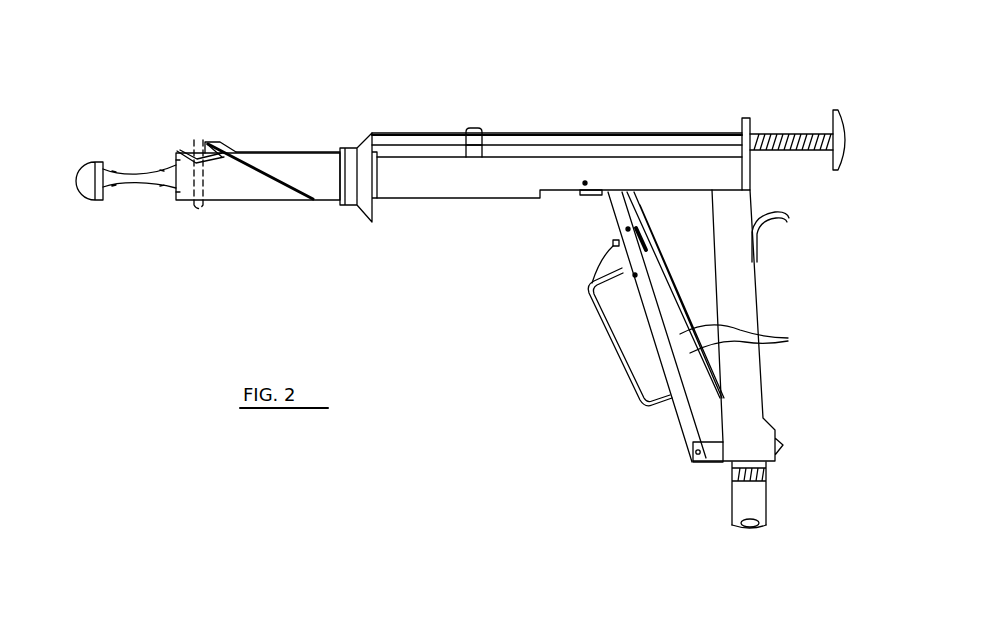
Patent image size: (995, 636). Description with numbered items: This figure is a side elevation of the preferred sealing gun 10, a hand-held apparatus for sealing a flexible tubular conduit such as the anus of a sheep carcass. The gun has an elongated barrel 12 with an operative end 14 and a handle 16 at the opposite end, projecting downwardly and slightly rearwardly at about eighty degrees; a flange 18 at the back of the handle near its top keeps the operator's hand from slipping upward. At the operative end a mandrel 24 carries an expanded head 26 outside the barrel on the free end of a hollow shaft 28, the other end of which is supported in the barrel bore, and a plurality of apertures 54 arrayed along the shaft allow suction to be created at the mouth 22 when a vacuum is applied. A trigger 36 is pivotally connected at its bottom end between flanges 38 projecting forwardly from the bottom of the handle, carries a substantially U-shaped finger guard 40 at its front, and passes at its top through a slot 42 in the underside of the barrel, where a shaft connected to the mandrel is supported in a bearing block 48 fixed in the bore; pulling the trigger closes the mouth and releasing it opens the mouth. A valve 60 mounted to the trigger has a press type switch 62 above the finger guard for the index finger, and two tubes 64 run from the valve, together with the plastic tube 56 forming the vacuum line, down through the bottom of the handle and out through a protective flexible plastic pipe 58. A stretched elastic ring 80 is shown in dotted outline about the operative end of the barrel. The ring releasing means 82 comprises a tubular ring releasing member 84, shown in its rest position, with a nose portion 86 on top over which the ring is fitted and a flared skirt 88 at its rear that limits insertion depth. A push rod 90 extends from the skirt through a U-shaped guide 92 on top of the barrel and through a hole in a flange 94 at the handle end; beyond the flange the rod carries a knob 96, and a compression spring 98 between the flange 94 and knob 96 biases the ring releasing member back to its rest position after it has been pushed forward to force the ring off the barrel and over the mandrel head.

The sealing gun 10 is at (656, 34).
The barrel 12 is at (255, 201).
The operative end 14 is at (179, 201).
The handle 16 is at (756, 298).
The flange 18 is at (767, 225).
The mouth 22 is at (130, 158).
The mandrel 24 is at (98, 147).
The expanded head 26 is at (92, 190).
The shaft 28 is at (137, 188).
The trigger 36 is at (658, 343).
The flanges 38 is at (703, 463).
The finger guard 40 is at (596, 316).
The slot 42 is at (545, 197).
The bearing block 48 is at (585, 197).
The apertures 54 is at (170, 162).
The plastic tube 56 is at (668, 280).
The protective flexible plastic pipe 58 is at (768, 500).
The valve 60 is at (646, 262).
The press type switch 62 is at (613, 244).
The tubes 64 is at (750, 339).
The stretched elastic ring 80 is at (200, 210).
The ring releasing means 82 is at (488, 98).
The ring releasing member 84 is at (268, 151).
The nose portion 86 is at (205, 141).
The flared skirt 88 is at (360, 145).
The push rod 90 is at (590, 133).
The U-shaped guide 92 is at (480, 140).
The flange 94 is at (741, 120).
The knob 96 is at (842, 110).
The compression spring 98 is at (786, 133).